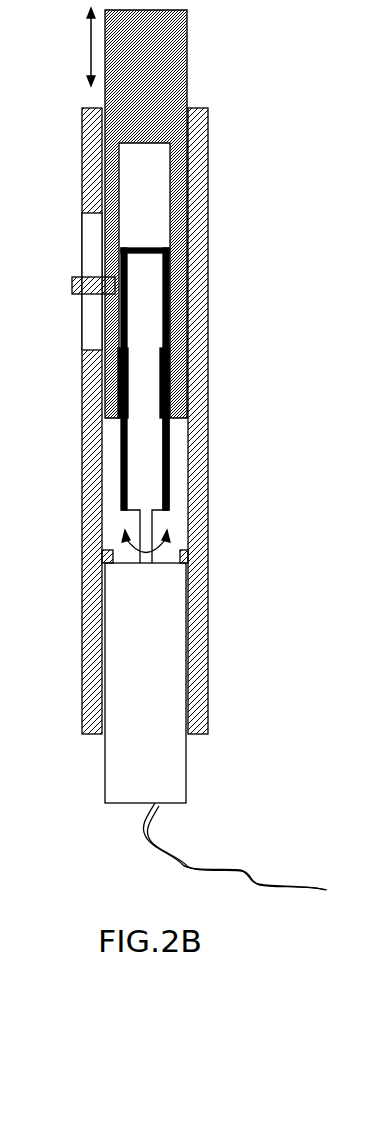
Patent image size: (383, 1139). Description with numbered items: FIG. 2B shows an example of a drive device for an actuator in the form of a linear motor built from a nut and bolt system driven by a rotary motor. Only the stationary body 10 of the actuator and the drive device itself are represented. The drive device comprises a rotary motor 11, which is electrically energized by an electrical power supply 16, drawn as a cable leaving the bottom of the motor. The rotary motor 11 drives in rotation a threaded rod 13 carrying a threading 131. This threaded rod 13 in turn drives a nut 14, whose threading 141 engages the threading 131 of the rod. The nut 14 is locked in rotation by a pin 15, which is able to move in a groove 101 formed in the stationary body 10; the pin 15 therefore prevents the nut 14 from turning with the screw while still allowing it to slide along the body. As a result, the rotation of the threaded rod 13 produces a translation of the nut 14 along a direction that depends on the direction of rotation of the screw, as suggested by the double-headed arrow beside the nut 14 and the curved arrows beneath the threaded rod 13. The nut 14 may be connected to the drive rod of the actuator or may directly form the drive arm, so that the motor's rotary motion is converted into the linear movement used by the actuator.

The stationary body 10 is at (198, 170).
The groove 101 is at (93, 256).
The rotary motor 11 is at (150, 642).
The threaded rod 13 is at (142, 487).
The threading 131 is at (168, 437).
The nut 14 is at (167, 73).
The threading 141 is at (162, 356).
The pin 15 is at (72, 286).
The electrical power supply 16 is at (210, 867).